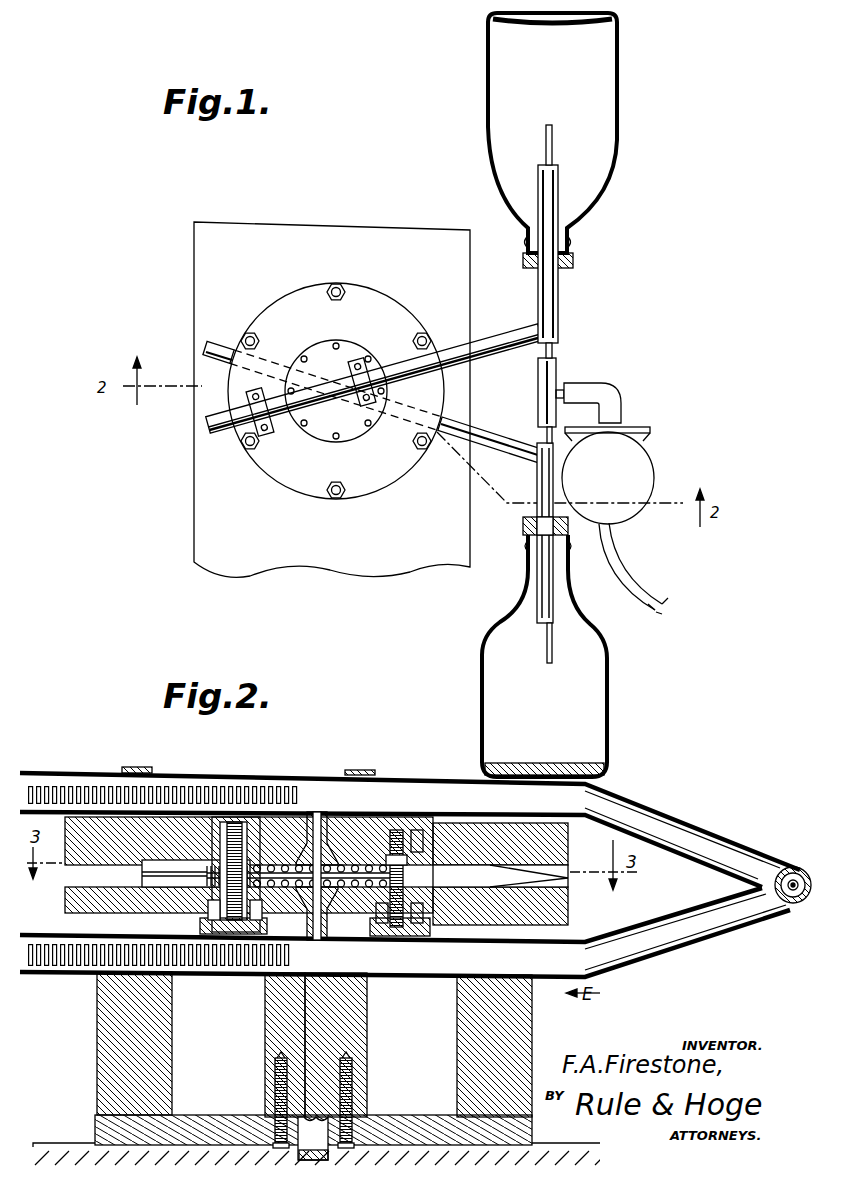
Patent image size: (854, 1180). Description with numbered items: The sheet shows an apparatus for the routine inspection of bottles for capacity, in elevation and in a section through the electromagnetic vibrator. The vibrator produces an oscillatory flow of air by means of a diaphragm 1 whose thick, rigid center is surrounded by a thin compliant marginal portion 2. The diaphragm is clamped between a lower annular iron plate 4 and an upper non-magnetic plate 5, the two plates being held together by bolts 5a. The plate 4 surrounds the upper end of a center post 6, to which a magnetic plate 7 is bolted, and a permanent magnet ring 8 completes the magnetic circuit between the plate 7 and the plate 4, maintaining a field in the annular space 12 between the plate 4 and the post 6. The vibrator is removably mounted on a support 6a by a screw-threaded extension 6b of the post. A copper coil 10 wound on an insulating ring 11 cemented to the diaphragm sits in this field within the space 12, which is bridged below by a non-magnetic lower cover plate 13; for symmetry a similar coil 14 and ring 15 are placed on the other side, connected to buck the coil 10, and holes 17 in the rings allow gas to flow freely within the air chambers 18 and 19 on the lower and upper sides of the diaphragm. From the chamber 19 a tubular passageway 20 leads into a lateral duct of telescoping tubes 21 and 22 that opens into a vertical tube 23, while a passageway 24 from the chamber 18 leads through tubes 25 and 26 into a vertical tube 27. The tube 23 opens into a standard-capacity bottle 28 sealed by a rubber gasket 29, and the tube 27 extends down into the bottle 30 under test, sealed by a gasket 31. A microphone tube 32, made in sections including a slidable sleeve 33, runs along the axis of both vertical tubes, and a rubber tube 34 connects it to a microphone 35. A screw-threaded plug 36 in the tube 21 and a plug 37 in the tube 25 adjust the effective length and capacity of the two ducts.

In FIG. 2, the diaphragm 1 is at (492, 880).
In FIG. 2, the compliant marginal portion 2 is at (494, 886).
In FIG. 2, the lower annular iron plate 4 is at (560, 907).
In FIG. 1, the upper annular plate 5 is at (381, 302).
In FIG. 2, the upper annular plate 5 is at (562, 860).
In FIG. 1, the bolts 5a is at (342, 285).
In FIG. 2, the center post 6 is at (356, 1032).
In FIG. 1, the support 6a is at (390, 232).
In FIG. 2, the support 6a is at (47, 1143).
In FIG. 2, the screw-threaded extension 6b is at (346, 1116).
In FIG. 2, the plate of magnetic material 7 is at (393, 1128).
In FIG. 2, the permanent magnet ring 8 is at (527, 1027).
In FIG. 2, the coil 10 is at (420, 940).
In FIG. 2, the insulating ring 11 is at (394, 940).
In FIG. 2, the annular space 12 is at (206, 950).
In FIG. 2, the lower cover plate 13 is at (222, 937).
In FIG. 2, the coil 14 is at (415, 830).
In FIG. 2, the insulating ring 15 is at (405, 852).
In FIG. 2, the holes 17 is at (394, 862).
In FIG. 2, the air chamber 18 is at (172, 880).
In FIG. 2, the air chamber 19 is at (165, 868).
In FIG. 1, the tubular passageway 20 is at (345, 365).
In FIG. 2, the tubular passageway 20 is at (318, 812).
In FIG. 1, the tube 21 is at (272, 426).
In FIG. 2, the tube 21 is at (292, 790).
In FIG. 1, the tube 22 is at (505, 333).
In FIG. 2, the tube 22 is at (690, 830).
In FIG. 1, the vertical tube 23 is at (559, 306).
In FIG. 2, the tubular passageway 24 is at (267, 1003).
In FIG. 1, the tube 25 is at (222, 341).
In FIG. 2, the tube 25 is at (88, 971).
In FIG. 1, the tube 26 is at (480, 436).
In FIG. 2, the tube 26 is at (457, 975).
In FIG. 1, the vertical tube 27 is at (542, 483).
In FIG. 2, the vertical tube 27 is at (795, 867).
In FIG. 1, the bottle of standard capacity 28 is at (618, 136).
In FIG. 1, the gasket 29 is at (574, 259).
In FIG. 1, the bottle 30 is at (609, 698).
In FIG. 1, the gasket 31 is at (524, 530).
In FIG. 1, the microphone tube 32 is at (553, 134).
In FIG. 2, the microphone tube 32 is at (791, 892).
In FIG. 1, the central section or sleeve 33 is at (557, 371).
In FIG. 1, the rubber tube 34 is at (614, 396).
In FIG. 1, the microphone 35 is at (650, 459).
In FIG. 2, the plug 36 is at (246, 780).
In FIG. 2, the screw-threaded plug 37 is at (252, 969).